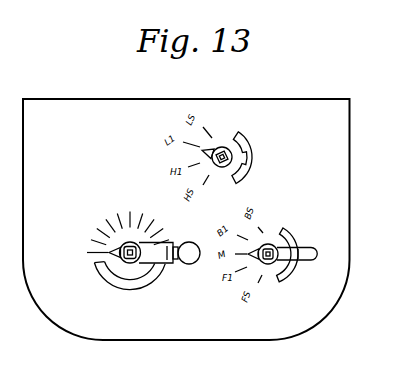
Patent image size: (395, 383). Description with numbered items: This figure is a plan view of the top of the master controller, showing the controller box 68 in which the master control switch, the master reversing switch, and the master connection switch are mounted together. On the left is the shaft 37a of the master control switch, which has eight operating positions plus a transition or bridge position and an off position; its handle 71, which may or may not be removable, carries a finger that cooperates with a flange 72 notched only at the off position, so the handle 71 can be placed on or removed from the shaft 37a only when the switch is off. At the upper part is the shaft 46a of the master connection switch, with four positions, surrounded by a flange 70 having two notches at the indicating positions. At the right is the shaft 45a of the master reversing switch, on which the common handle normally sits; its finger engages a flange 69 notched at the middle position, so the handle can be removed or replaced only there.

The controller box 68 is at (208, 341).
The shaft of the master control switch 37a is at (125, 262).
The flange 72 is at (152, 277).
The handle 71 is at (170, 264).
The shaft of the master connection switch 46a is at (220, 152).
The flange 70 is at (250, 167).
The shaft of the master reversing switch 45a is at (269, 251).
The flange 69 is at (297, 263).